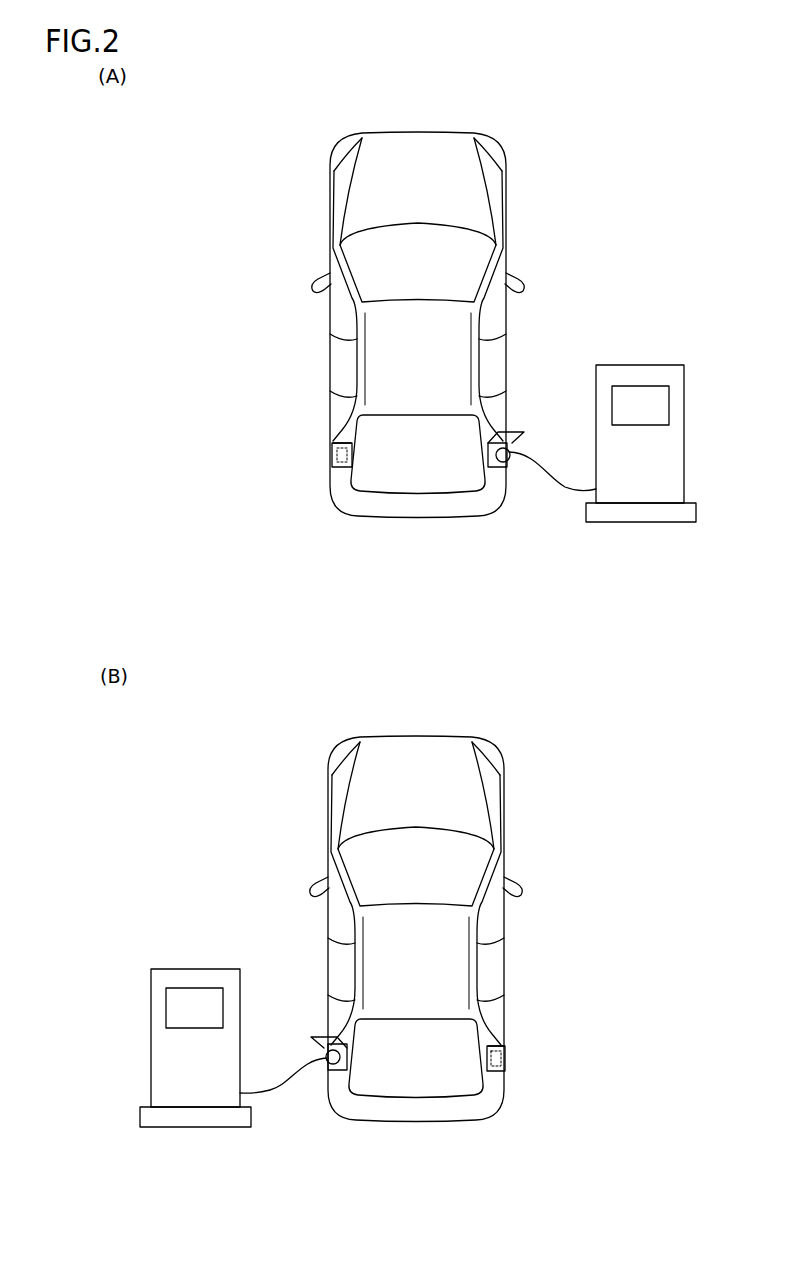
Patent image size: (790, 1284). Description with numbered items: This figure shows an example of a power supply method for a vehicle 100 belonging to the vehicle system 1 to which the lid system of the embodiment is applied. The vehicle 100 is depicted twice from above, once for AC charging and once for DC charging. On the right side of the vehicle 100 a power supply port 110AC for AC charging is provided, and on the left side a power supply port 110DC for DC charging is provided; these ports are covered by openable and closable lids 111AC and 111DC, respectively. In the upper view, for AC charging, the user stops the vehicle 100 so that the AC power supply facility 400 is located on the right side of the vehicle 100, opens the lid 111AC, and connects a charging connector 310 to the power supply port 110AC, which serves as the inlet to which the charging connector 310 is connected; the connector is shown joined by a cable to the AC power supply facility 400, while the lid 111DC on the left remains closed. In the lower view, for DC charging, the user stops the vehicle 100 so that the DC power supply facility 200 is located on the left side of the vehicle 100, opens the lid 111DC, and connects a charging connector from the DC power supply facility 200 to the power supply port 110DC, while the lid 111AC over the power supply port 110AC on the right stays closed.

The vehicle system 1 is at (274, 161).
The vehicle 100 is at (452, 135).
The power supply port for DC charging 110DC is at (332, 455).
The lid 111DC is at (332, 441).
The power supply port for AC charging 110AC is at (500, 467).
The lid 111AC is at (508, 433).
The charging connector 310 is at (512, 446).
The AC power supply facility 400 is at (638, 365).
The DC power supply facility 200 is at (197, 969).